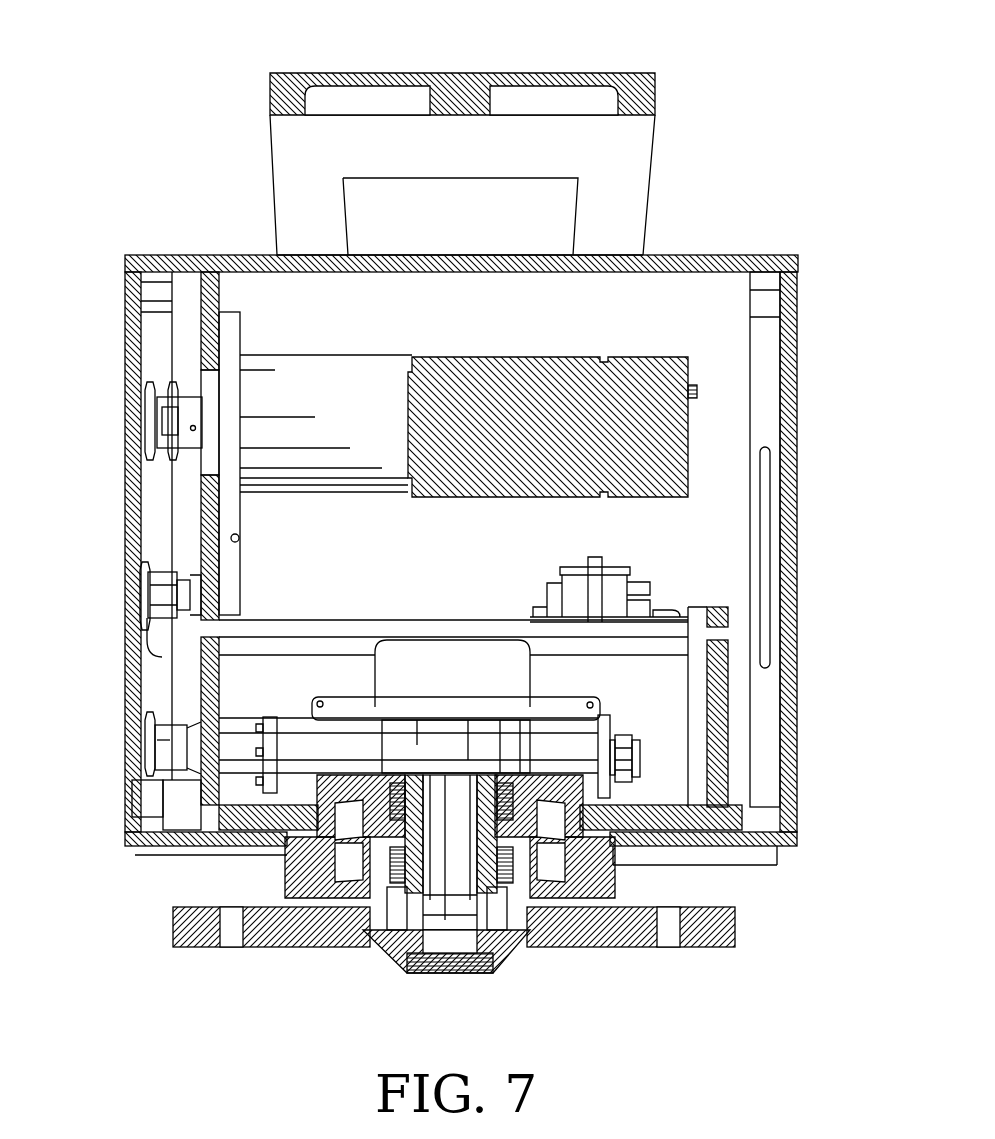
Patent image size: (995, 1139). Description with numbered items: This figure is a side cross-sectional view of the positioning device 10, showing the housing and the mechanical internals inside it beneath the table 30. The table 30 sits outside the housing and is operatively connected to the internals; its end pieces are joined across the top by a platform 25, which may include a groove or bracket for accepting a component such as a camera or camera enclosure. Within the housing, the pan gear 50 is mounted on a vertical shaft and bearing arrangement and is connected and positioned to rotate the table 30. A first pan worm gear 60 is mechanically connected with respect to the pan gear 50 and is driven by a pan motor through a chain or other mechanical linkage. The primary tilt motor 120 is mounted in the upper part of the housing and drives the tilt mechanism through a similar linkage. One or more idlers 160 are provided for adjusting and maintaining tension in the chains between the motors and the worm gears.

The positioning device 10 is at (158, 112).
The platform 25 is at (655, 80).
The table 30 is at (697, 187).
The primary tilt motor 120 is at (668, 417).
The idlers 160 is at (137, 598).
The first pan worm gear 60 is at (137, 752).
The pan gear 50 is at (577, 750).